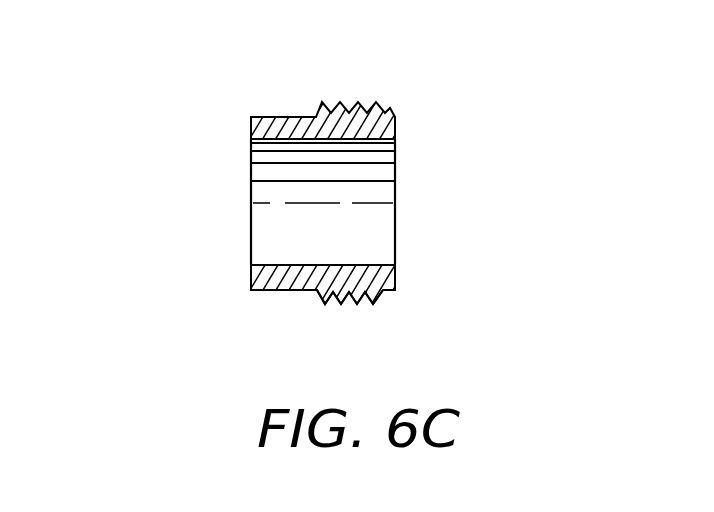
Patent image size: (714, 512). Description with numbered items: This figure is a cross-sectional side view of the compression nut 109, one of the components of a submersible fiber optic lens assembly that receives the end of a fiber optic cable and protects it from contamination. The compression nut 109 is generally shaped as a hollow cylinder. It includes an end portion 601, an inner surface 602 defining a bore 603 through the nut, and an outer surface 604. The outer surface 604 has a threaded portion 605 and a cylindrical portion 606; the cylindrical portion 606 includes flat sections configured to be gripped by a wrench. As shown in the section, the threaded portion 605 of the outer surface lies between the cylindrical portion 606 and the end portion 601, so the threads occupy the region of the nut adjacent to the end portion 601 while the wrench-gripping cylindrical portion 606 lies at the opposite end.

The compression nut 109 is at (446, 90).
The end portion 601 is at (396, 169).
The inner surface 602 is at (277, 264).
The bore 603 is at (375, 224).
The outer surface 604 is at (277, 117).
The threaded portion 605 is at (375, 302).
The cylindrical portion 606 is at (279, 291).